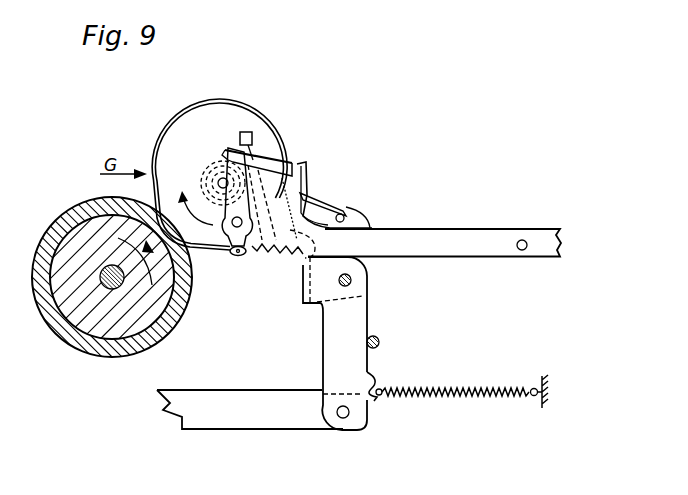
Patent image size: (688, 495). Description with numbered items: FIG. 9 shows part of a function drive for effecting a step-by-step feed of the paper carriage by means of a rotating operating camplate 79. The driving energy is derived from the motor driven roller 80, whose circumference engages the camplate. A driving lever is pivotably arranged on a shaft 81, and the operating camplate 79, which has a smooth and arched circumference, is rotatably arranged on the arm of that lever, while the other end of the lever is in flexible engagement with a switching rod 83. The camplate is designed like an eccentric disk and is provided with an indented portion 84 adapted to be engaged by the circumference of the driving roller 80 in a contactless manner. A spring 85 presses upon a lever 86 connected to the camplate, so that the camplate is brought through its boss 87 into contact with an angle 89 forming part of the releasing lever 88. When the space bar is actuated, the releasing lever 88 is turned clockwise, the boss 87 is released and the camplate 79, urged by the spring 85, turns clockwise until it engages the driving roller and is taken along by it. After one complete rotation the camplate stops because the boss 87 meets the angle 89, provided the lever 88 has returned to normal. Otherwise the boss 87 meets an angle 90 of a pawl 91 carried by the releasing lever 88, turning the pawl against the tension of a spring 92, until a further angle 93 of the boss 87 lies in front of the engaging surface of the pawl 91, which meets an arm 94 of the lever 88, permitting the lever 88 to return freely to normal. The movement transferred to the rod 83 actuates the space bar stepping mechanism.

The operating camplate 79 is at (235, 121).
The motor driven roller 80 is at (98, 232).
The shaft 81 is at (352, 280).
The switching rod 83 is at (268, 418).
The indented portion 84 is at (182, 205).
The spring 85 is at (343, 214).
The lever 86 is at (262, 170).
The boss 87 is at (250, 132).
The releasing lever 88 is at (446, 241).
The angle 89 is at (253, 138).
The angle 90 is at (227, 143).
The pawl 91 is at (288, 160).
The spring 92 is at (278, 253).
The further angle 93 is at (300, 164).
The arm 94 is at (297, 180).